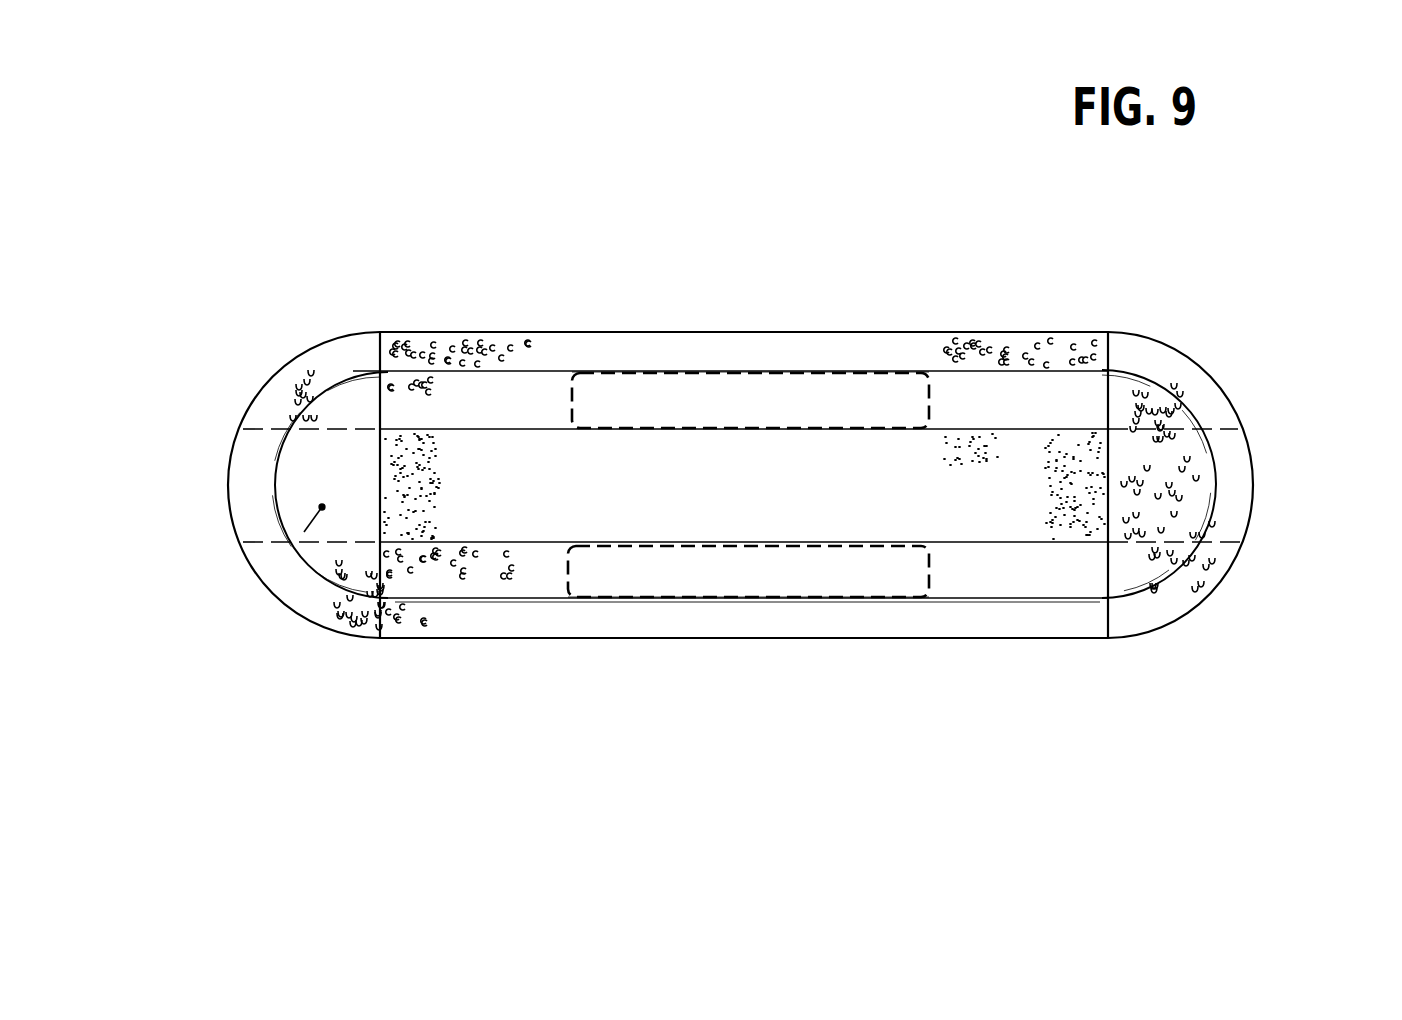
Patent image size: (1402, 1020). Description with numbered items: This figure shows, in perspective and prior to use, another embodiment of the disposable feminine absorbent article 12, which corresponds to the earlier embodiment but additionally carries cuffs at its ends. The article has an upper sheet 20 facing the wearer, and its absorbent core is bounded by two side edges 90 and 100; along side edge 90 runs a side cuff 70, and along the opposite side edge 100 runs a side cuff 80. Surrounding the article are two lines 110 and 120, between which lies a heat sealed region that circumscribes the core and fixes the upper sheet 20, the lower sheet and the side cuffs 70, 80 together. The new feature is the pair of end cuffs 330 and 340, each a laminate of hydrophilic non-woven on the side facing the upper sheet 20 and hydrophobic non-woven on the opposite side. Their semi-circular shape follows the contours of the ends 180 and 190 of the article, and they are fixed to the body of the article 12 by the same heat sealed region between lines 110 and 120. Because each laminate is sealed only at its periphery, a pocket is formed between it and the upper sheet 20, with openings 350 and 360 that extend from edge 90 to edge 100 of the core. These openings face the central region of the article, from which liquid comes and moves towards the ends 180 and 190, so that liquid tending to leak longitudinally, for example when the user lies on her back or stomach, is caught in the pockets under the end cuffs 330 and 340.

The absorbent article 12 is at (300, 206).
The upper sheet 20 is at (634, 463).
The cuff 70 is at (725, 398).
The cuff 80 is at (717, 565).
The side edge 90 is at (858, 372).
The side edge 100 is at (766, 600).
The line 110 is at (353, 377).
The line 120 is at (268, 384).
The end 180 is at (1272, 500).
The end 190 is at (200, 498).
The end cuff 330 is at (1157, 550).
The end cuff 340 is at (292, 557).
The opening 350 is at (1100, 487).
The opening 360 is at (392, 486).